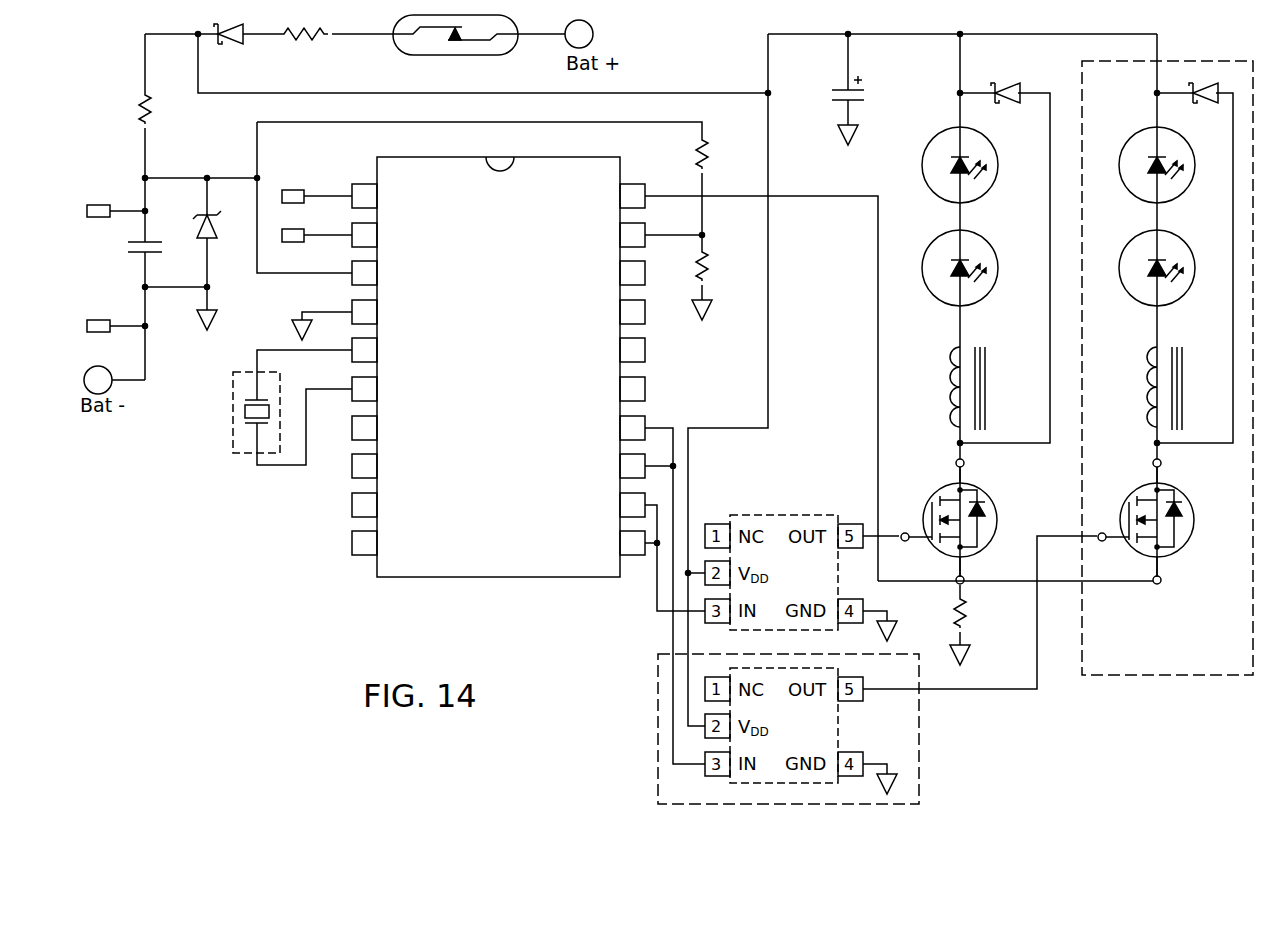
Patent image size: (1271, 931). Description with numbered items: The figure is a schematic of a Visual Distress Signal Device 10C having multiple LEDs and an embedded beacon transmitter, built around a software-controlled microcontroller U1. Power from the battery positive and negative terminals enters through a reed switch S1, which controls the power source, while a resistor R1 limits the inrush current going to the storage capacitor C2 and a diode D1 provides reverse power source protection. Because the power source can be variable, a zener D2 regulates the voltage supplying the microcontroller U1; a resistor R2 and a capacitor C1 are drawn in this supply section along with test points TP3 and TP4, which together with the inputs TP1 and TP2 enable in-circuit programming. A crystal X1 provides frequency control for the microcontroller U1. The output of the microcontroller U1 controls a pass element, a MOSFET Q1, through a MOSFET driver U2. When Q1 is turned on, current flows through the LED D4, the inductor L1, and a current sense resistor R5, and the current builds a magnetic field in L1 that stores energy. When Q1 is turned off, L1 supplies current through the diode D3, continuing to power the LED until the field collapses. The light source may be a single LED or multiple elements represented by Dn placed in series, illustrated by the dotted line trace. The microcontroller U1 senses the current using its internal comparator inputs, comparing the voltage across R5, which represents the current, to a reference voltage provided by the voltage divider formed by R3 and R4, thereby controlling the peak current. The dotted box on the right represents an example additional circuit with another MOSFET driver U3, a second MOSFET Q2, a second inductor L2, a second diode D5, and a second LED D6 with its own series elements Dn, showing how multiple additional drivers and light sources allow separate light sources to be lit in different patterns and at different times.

The Visual Distress Signal Device 10C is at (321, 588).
The reverse power source protection diode D1 is at (233, 51).
The inrush current limiting resistor R1 is at (304, 46).
The reed switch S1 is at (455, 49).
The resistor R2 is at (162, 113).
The input TP3 is at (116, 197).
The capacitor C1 is at (154, 259).
The zener D2 is at (196, 254).
The input TP4 is at (113, 314).
The input TP1 is at (313, 182).
The input TP2 is at (313, 247).
The microcontroller U1 is at (498, 353).
The crystal X1 is at (278, 407).
The voltage divider resistor R3 is at (720, 155).
The voltage divider resistor R4 is at (720, 266).
The storage capacitor C2 is at (858, 89).
The diode D3 is at (1010, 106).
The multiple light source elements Dn is at (1047, 170).
The LED D4 is at (948, 271).
The inductor L1 is at (952, 388).
The MOSFET Q1 is at (947, 517).
The current sense resistor R5 is at (975, 631).
The diode D5 is at (1205, 106).
The LED D6 is at (1146, 271).
The inductor L2 is at (1149, 388).
The MOSFET Q2 is at (1144, 521).
The MOSFET Driver U2 is at (802, 563).
The MOSFET Driver U3 is at (877, 670).